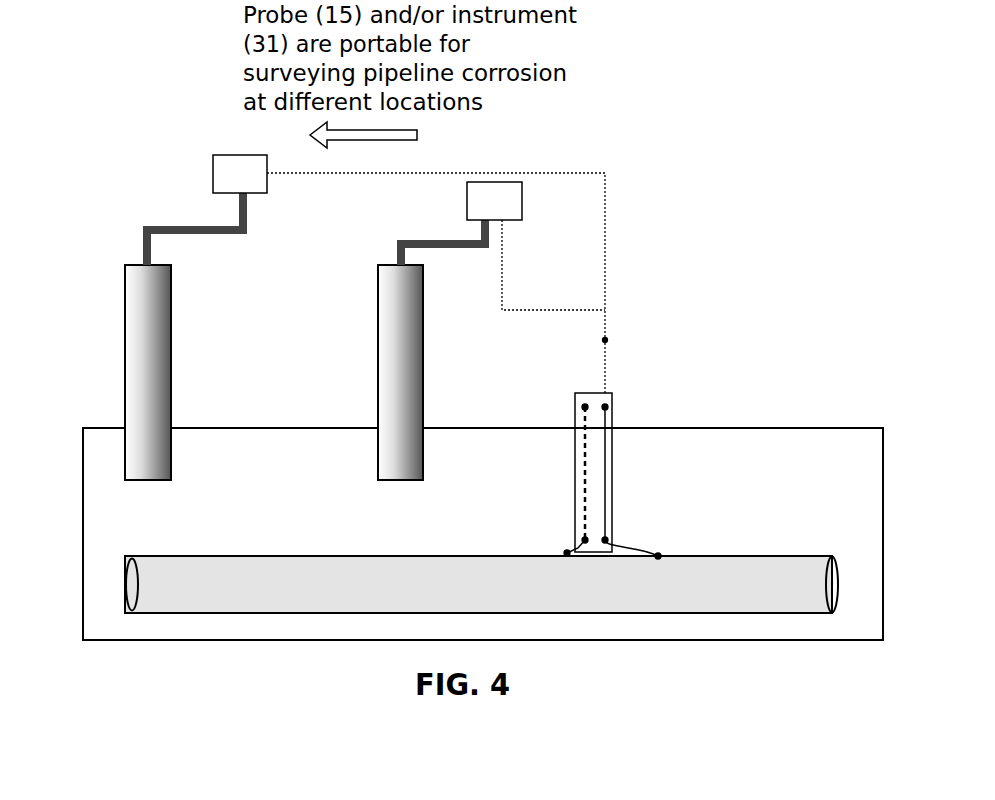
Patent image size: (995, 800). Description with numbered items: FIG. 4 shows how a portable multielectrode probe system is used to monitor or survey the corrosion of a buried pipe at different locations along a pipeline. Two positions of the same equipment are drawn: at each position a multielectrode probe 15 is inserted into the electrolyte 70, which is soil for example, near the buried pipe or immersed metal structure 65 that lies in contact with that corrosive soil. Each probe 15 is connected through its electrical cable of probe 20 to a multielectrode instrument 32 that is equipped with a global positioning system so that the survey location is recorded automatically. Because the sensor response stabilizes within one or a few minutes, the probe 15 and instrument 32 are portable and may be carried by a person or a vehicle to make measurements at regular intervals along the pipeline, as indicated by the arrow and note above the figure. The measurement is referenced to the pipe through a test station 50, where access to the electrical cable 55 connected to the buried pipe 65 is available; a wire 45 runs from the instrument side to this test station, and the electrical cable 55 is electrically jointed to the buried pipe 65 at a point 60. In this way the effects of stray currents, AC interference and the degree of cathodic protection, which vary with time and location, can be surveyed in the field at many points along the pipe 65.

The multielectrode probe 15 is at (114, 297).
The electrical cable of probe 20 is at (135, 242).
The multielectrode instrument equipped with global positioning system 32 is at (212, 147).
The wire connecting the coupling joint to the buried pipe 45 is at (605, 340).
The test station 50 is at (619, 401).
The electrical cable connected to the buried pipe 55 is at (612, 450).
The point where the electrical cable is jointed to the buried pipe 60 is at (660, 548).
The buried pipe or immersed metal structure 65 is at (692, 567).
The electrolyte 70 is at (813, 503).